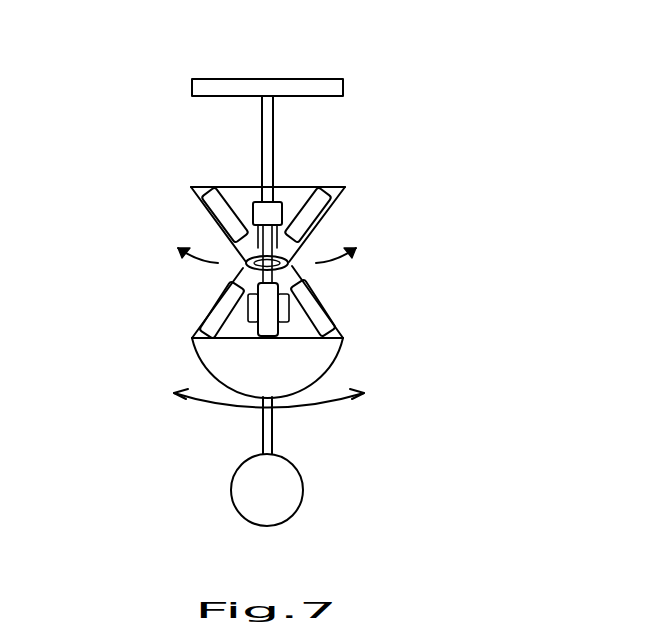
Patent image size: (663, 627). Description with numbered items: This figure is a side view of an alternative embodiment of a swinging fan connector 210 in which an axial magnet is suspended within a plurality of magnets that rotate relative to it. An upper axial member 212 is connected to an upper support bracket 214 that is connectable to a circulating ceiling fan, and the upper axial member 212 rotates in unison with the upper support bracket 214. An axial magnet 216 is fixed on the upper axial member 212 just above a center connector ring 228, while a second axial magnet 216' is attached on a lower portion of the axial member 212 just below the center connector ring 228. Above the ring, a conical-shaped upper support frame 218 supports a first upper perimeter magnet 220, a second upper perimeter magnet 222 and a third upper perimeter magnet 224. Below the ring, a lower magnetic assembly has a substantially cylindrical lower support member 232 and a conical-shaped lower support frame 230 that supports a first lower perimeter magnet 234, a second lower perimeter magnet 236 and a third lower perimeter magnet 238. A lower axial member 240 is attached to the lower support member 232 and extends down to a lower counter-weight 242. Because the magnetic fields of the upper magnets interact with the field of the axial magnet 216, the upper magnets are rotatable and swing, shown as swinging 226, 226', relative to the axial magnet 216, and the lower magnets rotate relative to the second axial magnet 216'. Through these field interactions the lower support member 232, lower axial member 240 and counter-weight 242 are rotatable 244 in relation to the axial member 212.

The swinging fan connector 210 is at (414, 258).
The upper axial member 212 is at (273, 128).
The upper support bracket 214 is at (313, 88).
The axial magnet 216 is at (301, 217).
The second axial magnet 216' is at (226, 305).
The upper support frame 218 is at (347, 197).
The first upper perimeter magnet 220 is at (316, 212).
The second upper perimeter magnet 222 is at (200, 203).
The third upper perimeter magnet 224 is at (240, 190).
The swinging 226 is at (361, 276).
The swinging 226' is at (165, 262).
The center connector ring 228 is at (237, 250).
The lower support frame 230 is at (345, 333).
The lower support member 232 is at (287, 375).
The first lower perimeter magnet 234 is at (322, 312).
The second lower perimeter magnet 236 is at (215, 313).
The third lower perimeter magnet 238 is at (203, 357).
The lower axial member 240 is at (270, 430).
The lower counter-weight 242 is at (290, 495).
The rotatable 244 is at (203, 408).